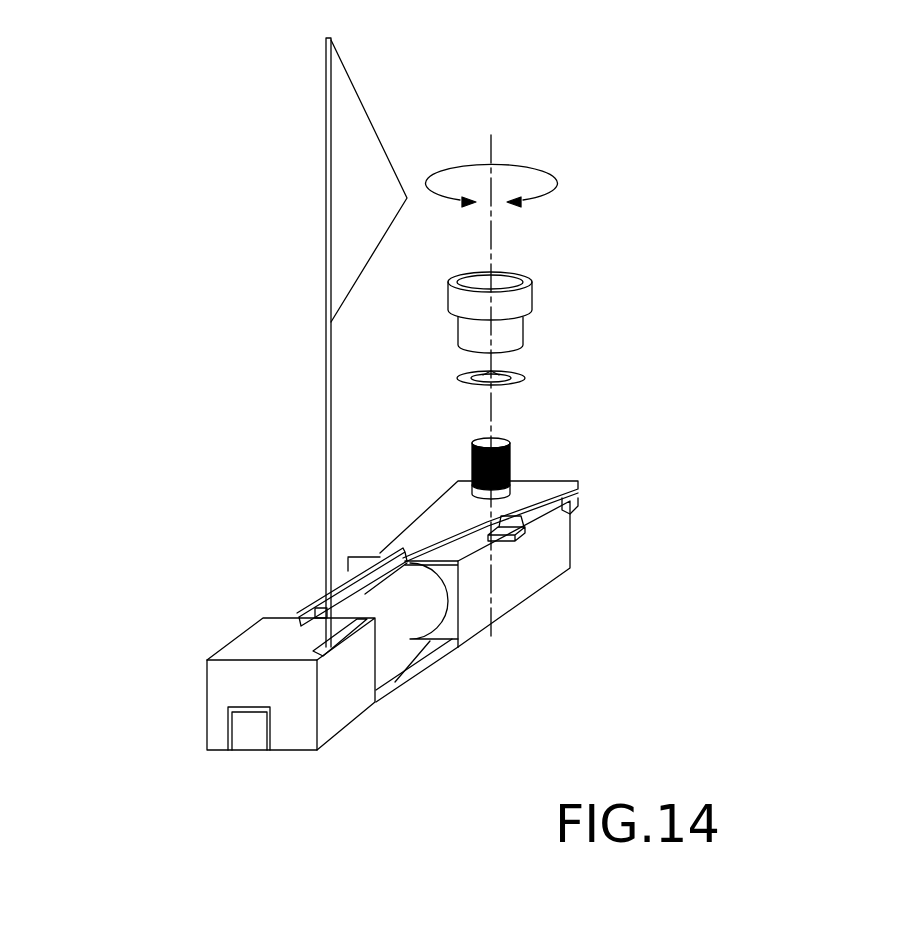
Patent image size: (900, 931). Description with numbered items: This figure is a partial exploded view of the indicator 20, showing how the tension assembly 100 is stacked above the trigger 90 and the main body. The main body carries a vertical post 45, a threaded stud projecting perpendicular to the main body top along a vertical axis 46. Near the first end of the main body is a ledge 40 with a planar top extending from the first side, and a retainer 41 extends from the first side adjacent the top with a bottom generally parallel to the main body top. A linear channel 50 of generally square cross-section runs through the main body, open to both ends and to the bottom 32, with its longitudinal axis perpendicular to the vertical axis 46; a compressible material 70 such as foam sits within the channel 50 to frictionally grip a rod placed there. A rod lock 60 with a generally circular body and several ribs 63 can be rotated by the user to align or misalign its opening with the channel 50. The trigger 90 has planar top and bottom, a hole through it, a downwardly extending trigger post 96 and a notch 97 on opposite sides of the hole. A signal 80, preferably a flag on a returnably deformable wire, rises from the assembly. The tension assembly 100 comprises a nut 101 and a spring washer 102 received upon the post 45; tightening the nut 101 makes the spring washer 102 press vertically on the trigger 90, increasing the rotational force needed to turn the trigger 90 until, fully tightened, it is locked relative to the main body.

The indicator 20 is at (785, 323).
The bottom 32 is at (327, 749).
The ledge 40 is at (568, 505).
The retainer 41 is at (513, 542).
The vertical post 45 is at (510, 463).
The vertical axis 46 is at (493, 152).
The channel 50 is at (271, 730).
The rod lock 60 is at (407, 637).
The ribs 63 is at (397, 677).
The compressible material 70 is at (252, 731).
The signal 80 is at (325, 298).
The trigger 90 is at (443, 492).
The trigger post 96 is at (577, 490).
The notch 97 is at (377, 553).
The tension assembly 100 is at (532, 282).
The nut 101 is at (532, 298).
The spring washer 102 is at (527, 378).